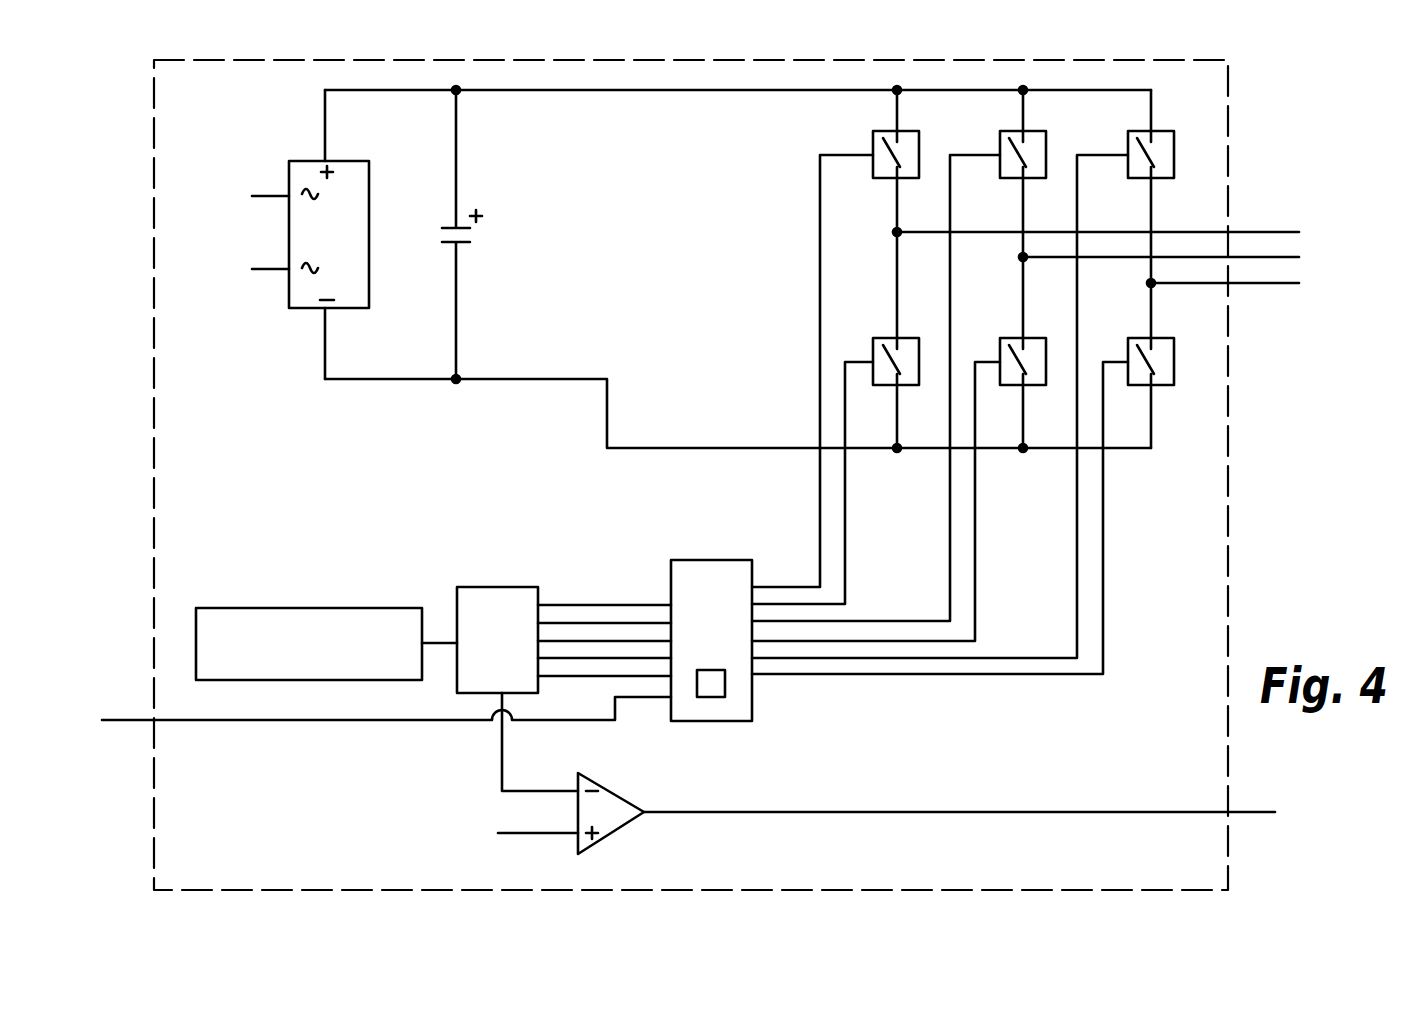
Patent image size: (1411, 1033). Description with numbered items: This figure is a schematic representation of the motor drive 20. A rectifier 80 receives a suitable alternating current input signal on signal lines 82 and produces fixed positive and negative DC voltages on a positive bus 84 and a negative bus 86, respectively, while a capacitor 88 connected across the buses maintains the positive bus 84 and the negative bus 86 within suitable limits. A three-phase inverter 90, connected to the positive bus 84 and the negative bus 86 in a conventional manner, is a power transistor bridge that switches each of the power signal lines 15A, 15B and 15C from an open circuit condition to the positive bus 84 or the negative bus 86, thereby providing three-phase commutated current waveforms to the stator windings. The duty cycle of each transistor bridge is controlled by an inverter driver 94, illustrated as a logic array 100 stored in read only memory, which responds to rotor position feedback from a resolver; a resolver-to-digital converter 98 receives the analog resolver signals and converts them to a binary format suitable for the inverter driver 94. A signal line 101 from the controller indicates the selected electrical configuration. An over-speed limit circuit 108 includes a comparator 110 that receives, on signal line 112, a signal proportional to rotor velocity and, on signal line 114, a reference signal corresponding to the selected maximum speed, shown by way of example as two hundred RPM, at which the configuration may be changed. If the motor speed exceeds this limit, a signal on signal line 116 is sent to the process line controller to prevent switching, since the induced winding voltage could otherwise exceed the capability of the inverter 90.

The motor drive 20 is at (152, 408).
The rectifier 80 is at (369, 184).
The signal lines 82 is at (272, 196).
The positive bus 84 is at (603, 90).
The negative bus 86 is at (523, 379).
The capacitor 88 is at (498, 231).
The three-phase inverter 90 is at (1067, 70).
The power signal line 15A is at (1283, 255).
The power signal line 15B is at (1275, 232).
The power signal line 15C is at (1284, 283).
The inverter driver 94 is at (327, 608).
The resolver-to-digital converter 98 is at (477, 587).
The logic array 100 is at (725, 683).
The signal line 101 is at (238, 720).
The over-speed limit circuit 108 is at (935, 760).
The comparator 110 is at (612, 786).
The signal line 112 is at (517, 791).
The signal line 114 is at (512, 833).
The signal line 116 is at (1118, 810).